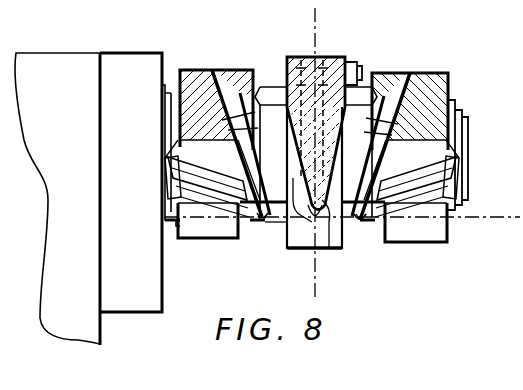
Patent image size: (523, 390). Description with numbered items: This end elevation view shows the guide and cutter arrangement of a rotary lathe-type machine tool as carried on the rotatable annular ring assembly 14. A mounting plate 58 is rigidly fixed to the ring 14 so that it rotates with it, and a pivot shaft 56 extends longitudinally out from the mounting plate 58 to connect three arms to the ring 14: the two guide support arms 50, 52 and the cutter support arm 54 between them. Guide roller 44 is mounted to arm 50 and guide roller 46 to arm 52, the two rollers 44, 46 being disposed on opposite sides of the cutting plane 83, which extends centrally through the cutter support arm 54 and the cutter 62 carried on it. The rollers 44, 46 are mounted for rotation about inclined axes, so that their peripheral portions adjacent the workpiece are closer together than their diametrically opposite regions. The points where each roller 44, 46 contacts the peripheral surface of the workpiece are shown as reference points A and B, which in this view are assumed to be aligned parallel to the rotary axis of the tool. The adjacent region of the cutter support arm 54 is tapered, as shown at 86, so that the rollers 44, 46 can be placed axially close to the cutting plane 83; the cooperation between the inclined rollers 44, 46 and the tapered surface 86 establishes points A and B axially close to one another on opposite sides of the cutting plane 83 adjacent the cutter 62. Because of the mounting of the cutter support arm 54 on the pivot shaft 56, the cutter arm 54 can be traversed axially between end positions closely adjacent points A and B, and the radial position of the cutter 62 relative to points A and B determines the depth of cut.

The annular ring assembly 14 is at (56, 62).
The mounting plate 58 is at (128, 58).
The support arm 50 is at (222, 75).
The roller guide element 44 is at (240, 100).
The cutter support arm 54 is at (333, 60).
The roller guide element 46 is at (382, 100).
The support arm 52 is at (430, 78).
The pivot shaft 56 is at (470, 120).
The cutter 62 is at (325, 257).
The cutting plane 83 is at (313, 248).
The tapered surface 86 is at (283, 230).
The reference point A is at (260, 224).
The reference point B is at (362, 226).